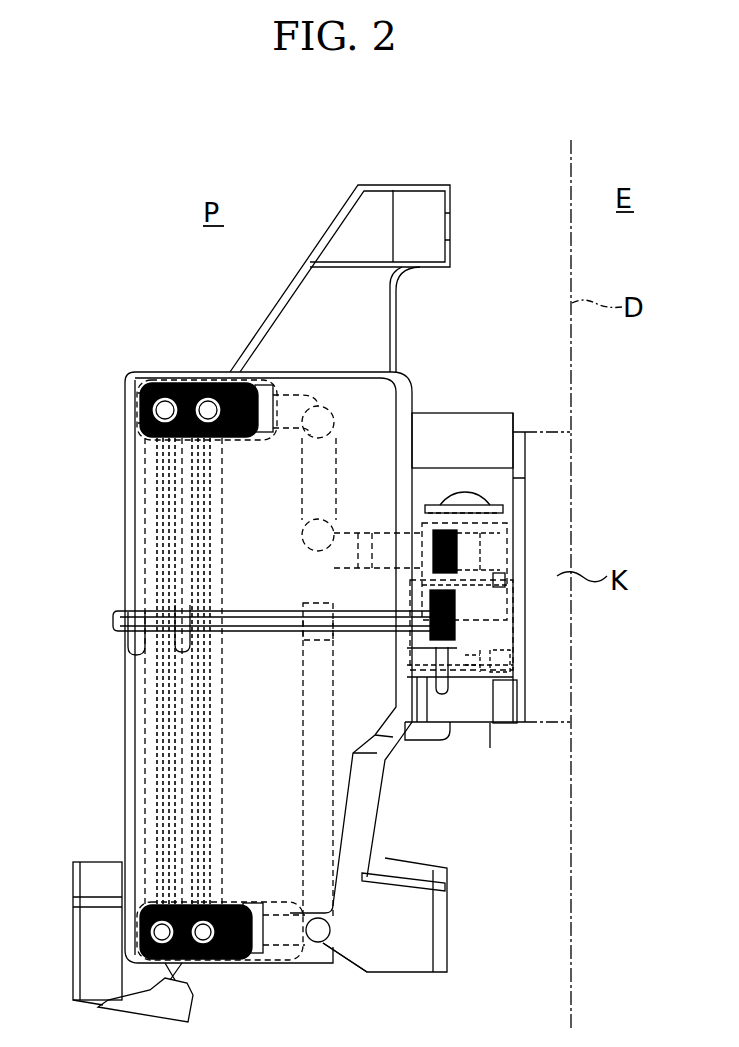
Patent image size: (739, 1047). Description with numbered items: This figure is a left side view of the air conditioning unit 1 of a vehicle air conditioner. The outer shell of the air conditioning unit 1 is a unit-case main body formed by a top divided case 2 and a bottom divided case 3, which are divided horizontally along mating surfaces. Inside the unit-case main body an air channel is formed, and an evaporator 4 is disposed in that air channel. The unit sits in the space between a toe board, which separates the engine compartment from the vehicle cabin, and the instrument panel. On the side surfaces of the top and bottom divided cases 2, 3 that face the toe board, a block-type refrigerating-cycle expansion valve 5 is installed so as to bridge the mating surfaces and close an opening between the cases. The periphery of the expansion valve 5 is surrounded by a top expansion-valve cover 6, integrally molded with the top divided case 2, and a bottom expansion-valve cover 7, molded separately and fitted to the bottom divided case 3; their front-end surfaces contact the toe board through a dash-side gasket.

The air conditioning unit 1 is at (116, 296).
The top divided case 2 is at (247, 500).
The bottom divided case 3 is at (238, 758).
The evaporator 4 is at (140, 546).
The expansion valve 5 is at (512, 486).
The top expansion-valve cover 6 is at (482, 437).
The bottom expansion-valve cover 7 is at (472, 707).